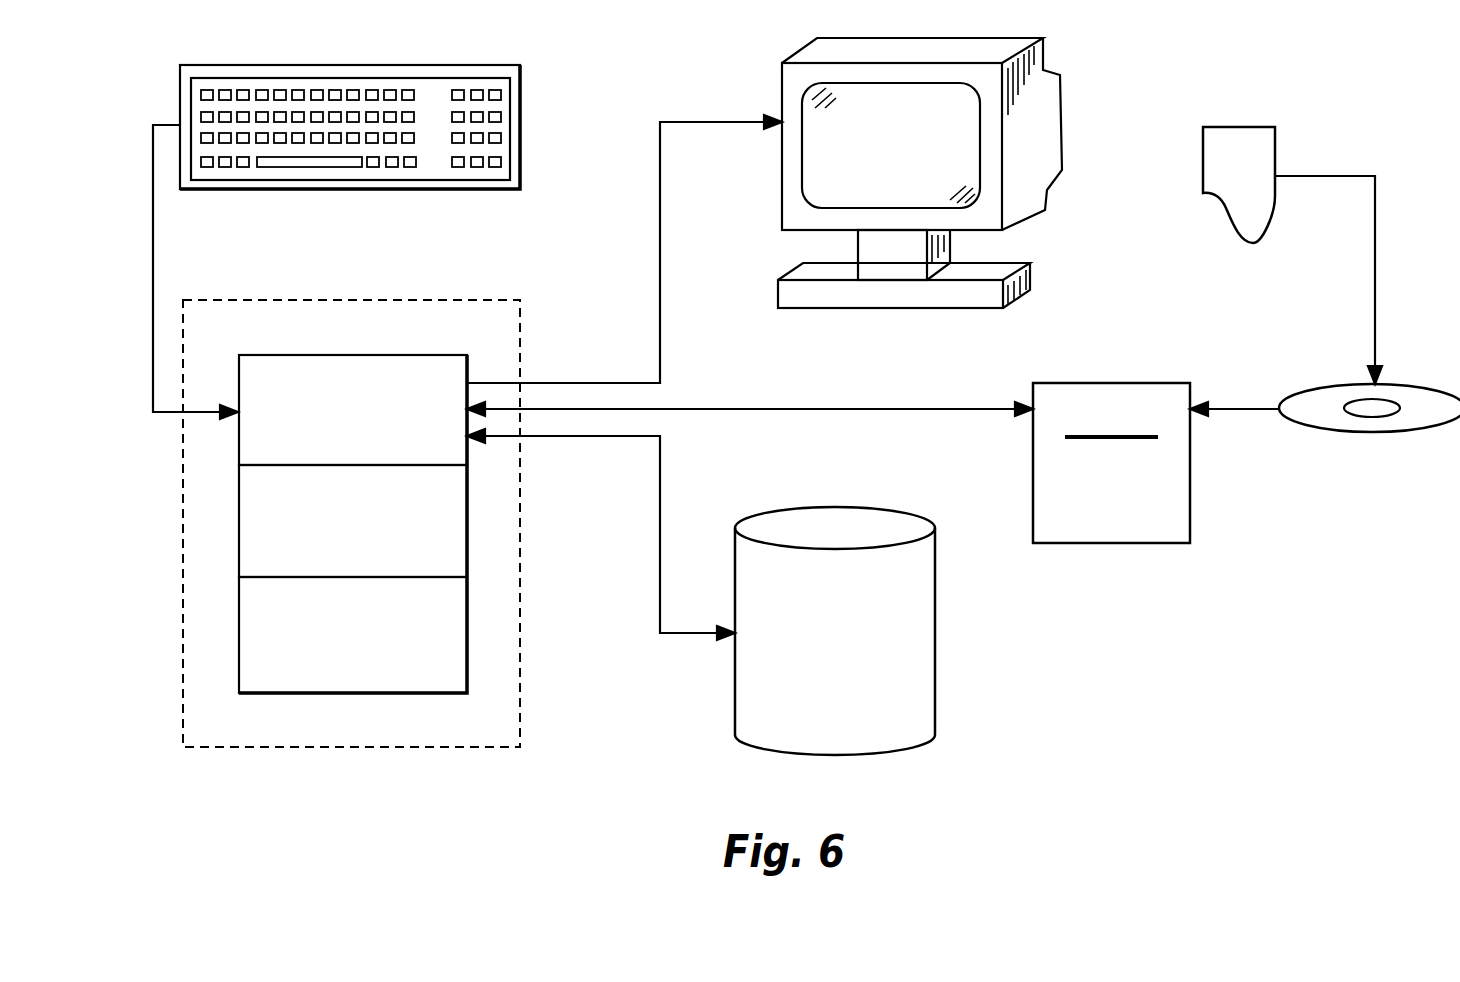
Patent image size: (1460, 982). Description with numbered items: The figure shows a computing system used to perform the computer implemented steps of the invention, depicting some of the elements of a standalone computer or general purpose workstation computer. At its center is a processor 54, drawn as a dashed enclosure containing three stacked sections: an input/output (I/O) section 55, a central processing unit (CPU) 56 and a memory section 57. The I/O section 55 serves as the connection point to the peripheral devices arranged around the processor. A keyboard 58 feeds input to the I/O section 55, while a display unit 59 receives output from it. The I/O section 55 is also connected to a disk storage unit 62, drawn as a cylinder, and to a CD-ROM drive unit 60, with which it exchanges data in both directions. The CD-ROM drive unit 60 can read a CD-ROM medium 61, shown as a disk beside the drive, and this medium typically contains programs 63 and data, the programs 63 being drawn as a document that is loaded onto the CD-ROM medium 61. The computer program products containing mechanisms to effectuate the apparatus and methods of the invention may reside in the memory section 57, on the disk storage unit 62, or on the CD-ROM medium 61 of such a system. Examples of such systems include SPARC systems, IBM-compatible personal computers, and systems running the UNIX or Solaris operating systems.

The processor 54 is at (470, 298).
The input/output (I/O) section 55 is at (330, 358).
The central processing unit (CPU) 56 is at (468, 538).
The memory section 57 is at (468, 677).
The keyboard 58 is at (498, 67).
The display unit 59 is at (990, 48).
The CD-ROM drive unit 60 is at (1062, 382).
The CD-ROM medium 61 is at (1348, 390).
The disk storage unit 62 is at (930, 605).
The programs 63 is at (1218, 137).